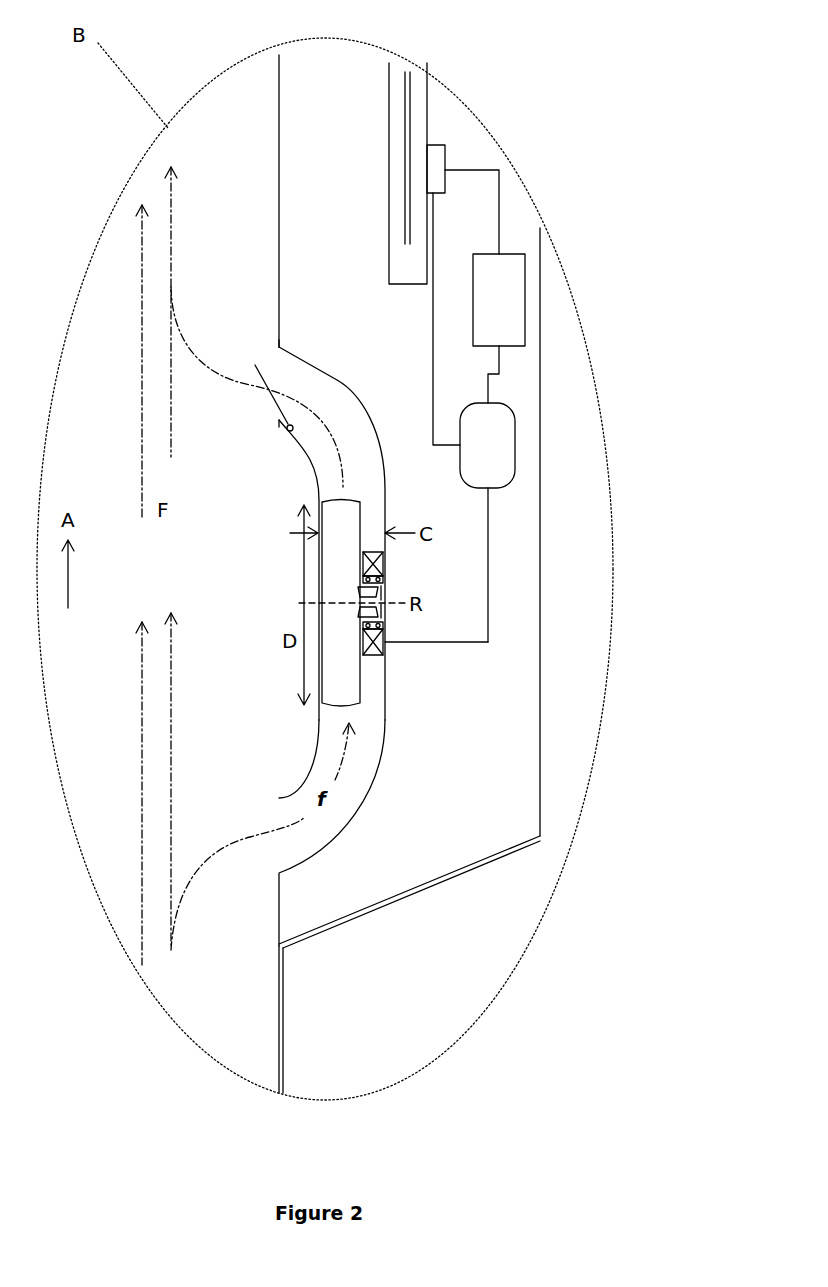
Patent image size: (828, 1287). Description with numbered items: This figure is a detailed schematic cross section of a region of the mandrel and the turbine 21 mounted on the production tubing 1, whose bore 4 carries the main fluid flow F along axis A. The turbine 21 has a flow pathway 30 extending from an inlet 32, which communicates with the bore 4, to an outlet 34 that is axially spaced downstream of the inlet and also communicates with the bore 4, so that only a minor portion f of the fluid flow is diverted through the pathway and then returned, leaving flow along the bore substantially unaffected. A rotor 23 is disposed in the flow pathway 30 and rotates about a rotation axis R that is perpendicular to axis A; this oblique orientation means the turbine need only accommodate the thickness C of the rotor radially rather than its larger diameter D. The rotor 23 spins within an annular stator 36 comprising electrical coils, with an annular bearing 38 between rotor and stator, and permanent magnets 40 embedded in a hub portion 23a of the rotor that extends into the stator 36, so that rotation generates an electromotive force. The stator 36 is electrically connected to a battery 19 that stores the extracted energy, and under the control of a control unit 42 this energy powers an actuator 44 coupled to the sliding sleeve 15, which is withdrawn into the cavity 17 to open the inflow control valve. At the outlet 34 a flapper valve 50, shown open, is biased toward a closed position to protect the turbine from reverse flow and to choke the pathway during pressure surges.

The production tubing 1 is at (280, 992).
The bore 4 is at (71, 696).
The sliding sleeve 15 is at (412, 103).
The cavity 17 is at (404, 265).
The battery 19 is at (495, 449).
The turbine 21 is at (328, 256).
The rotor 23 is at (350, 688).
The hub portion 23a is at (353, 595).
The flow pathway 30 is at (327, 402).
The inlet 32 is at (278, 857).
The outlet 34 is at (277, 367).
The annular stator 36 is at (383, 563).
The annular bearing 38 is at (383, 577).
The permanent magnets 40 is at (383, 610).
The control unit 42 is at (503, 316).
The actuator 44 is at (436, 165).
The flapper valve 50 is at (270, 400).